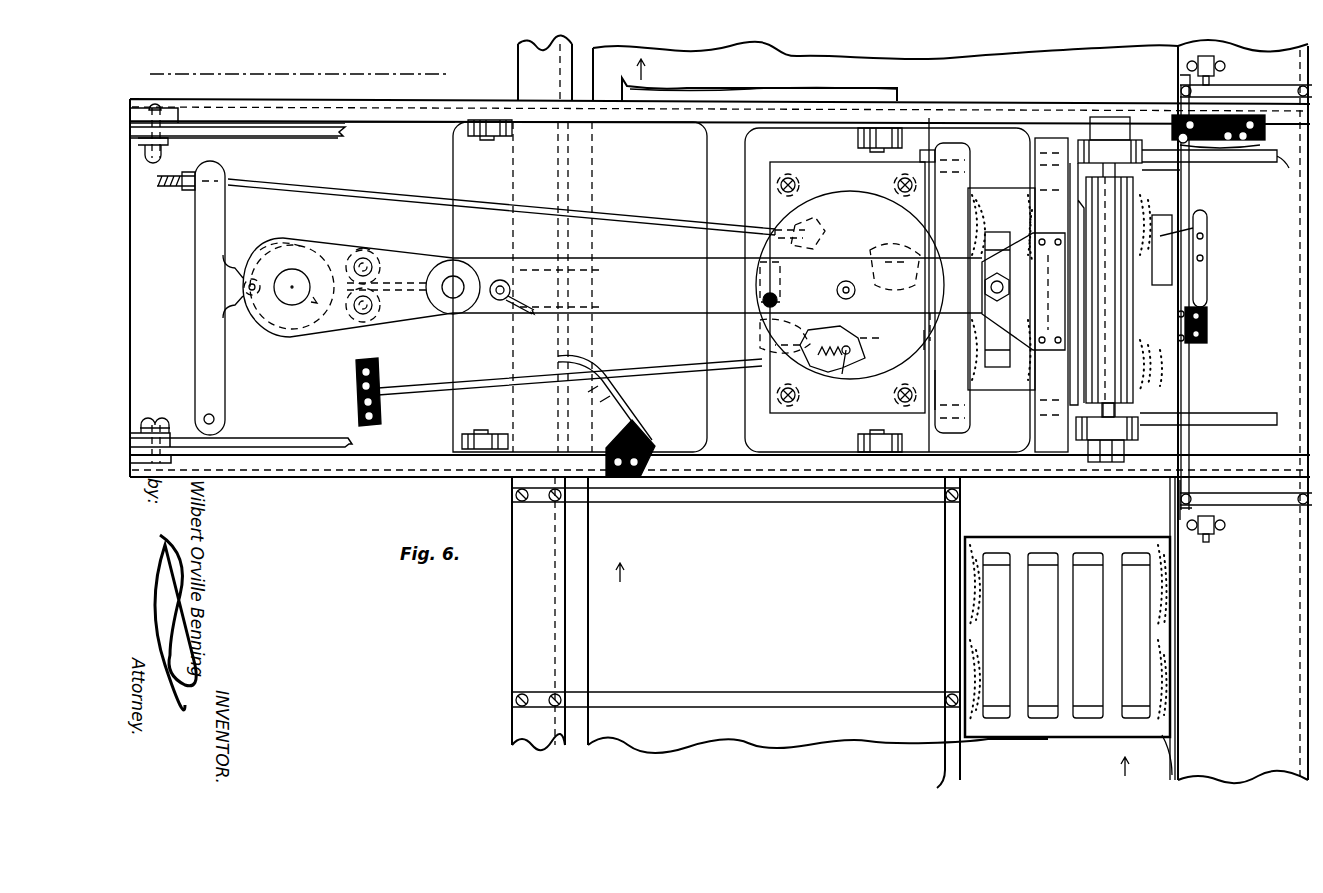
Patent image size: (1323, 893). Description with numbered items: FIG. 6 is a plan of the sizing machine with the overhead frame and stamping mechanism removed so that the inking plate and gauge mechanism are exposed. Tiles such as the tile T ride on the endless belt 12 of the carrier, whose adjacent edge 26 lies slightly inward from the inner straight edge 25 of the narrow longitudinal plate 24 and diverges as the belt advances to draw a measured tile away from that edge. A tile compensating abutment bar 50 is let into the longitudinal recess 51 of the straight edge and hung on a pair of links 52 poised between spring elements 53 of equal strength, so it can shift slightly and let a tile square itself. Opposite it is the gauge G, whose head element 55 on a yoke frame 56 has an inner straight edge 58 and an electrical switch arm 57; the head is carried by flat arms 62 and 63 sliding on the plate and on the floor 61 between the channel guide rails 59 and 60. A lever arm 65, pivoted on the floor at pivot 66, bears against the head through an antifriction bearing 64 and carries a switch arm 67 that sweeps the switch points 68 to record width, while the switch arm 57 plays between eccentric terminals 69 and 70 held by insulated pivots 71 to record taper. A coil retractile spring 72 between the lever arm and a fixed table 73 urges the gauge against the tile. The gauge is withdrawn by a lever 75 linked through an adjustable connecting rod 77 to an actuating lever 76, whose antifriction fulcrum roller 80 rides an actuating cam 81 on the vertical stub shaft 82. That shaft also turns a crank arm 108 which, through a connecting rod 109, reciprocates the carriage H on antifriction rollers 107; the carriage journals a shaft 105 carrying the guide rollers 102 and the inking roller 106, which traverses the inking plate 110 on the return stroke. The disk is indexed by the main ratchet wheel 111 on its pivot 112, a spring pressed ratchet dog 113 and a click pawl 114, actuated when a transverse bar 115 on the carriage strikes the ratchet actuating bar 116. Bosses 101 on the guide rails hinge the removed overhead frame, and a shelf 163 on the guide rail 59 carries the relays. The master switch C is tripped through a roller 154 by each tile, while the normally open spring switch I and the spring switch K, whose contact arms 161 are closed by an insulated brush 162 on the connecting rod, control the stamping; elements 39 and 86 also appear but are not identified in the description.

The endless belt 12 is at (171, 73).
The longitudinal plate 24 is at (1239, 411).
The inner straight edge 25 is at (1168, 750).
The adjacent edge of belt 26 is at (1170, 512).
The tray slots 39 is at (1043, 752).
The tile compensating abutment bar 50 is at (1190, 180).
The longitudinal recess 51 is at (1195, 202).
The links 52 is at (1242, 86).
The spring elements 53 is at (1192, 68).
The head element 55 is at (947, 390).
The yoke frame 56 is at (938, 266).
The electrical switch arm 57 is at (606, 268).
The inner straight edge of head 58 is at (1010, 130).
The channel guide rail 59 is at (436, 120).
The channel guide rail 60 is at (416, 476).
The floor or pan 61 is at (928, 164).
The flat supporting arm 62 is at (1268, 146).
The flat supporting arm 63 is at (1248, 418).
The antifriction bearing 64 is at (944, 300).
The lever arm 65 is at (930, 342).
The pivot 66 is at (932, 334).
The electrical switch arm 67 is at (480, 384).
The switch points 68 is at (380, 362).
The eccentric terminal 69 is at (368, 248).
The eccentric terminal 70 is at (356, 336).
The insulated pivots 71 is at (360, 248).
The coil retractile spring 72 is at (760, 330).
The fixed table 73 is at (798, 410).
The gauge return lever 75 is at (895, 259).
The actuating lever 76 is at (200, 270).
The adjustable connecting rod 77 is at (644, 216).
The antifriction fulcrum roller 80 is at (250, 258).
The actuating cam 81 is at (292, 242).
The vertical stub shaft 82 is at (292, 305).
The pin 86 is at (260, 322).
The bosses 101 is at (180, 118).
The guide rollers 102 is at (1138, 144).
The shaft 105 is at (1105, 416).
The inking roller 106 is at (1125, 290).
The antifriction rollers 107 is at (486, 126).
The crank arm 108 is at (466, 287).
The connecting rod 109 is at (602, 287).
The inking plate 110 is at (850, 285).
The main ratchet wheel 111 is at (753, 256).
The pivot of disk 112 is at (846, 282).
The spring pressed ratchet dog 113 is at (866, 396).
The click pawl 114 is at (820, 215).
The transverse bar 115 is at (712, 148).
The ratchet actuating bar 116 is at (765, 352).
The roller 154 is at (1195, 245).
The spring contact arms 161 is at (621, 417).
The insulated brush 162 is at (744, 294).
The shelf 163 is at (778, 86).
The master switch C is at (1208, 320).
The gauge G is at (952, 288).
The carriage H is at (642, 132).
The spring switch I is at (1218, 134).
The spring switch K is at (650, 436).
The tile T is at (1014, 190).